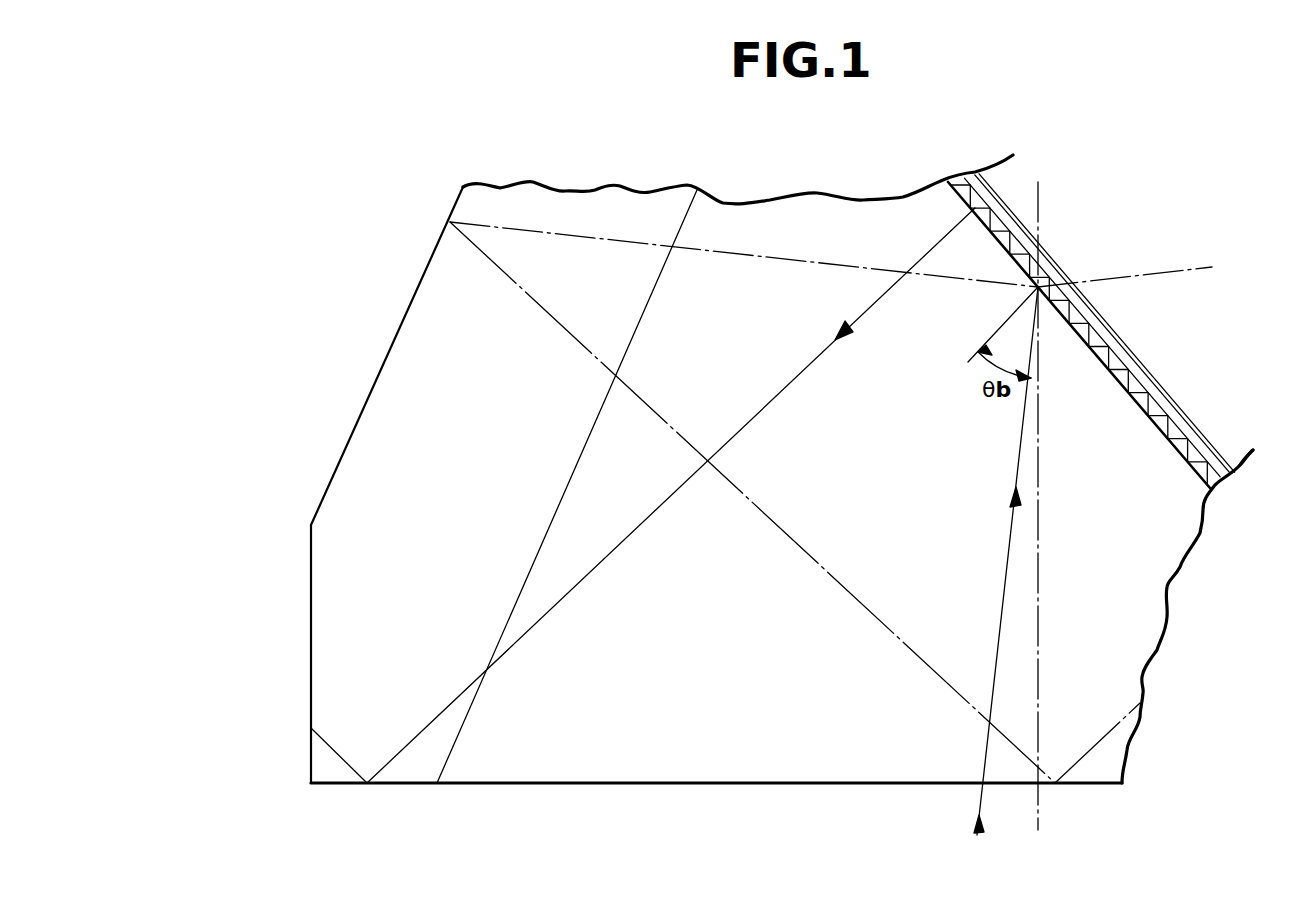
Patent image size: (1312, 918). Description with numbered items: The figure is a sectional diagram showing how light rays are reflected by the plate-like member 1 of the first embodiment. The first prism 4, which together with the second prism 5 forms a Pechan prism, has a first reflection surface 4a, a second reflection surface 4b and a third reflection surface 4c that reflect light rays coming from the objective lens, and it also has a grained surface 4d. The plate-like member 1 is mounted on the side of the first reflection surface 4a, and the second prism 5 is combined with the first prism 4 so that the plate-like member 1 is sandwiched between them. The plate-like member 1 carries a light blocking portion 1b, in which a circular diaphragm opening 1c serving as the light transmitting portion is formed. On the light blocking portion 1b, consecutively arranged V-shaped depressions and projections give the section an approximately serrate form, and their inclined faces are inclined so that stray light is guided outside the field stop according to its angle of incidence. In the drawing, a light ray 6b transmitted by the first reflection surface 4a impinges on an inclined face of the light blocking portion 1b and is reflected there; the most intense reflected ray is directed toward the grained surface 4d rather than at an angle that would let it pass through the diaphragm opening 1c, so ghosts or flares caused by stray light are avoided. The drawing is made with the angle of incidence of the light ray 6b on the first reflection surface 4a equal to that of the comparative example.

The plate-like member 1 is at (1096, 367).
The light blocking portion 1b is at (1133, 400).
The diaphragm opening 1c is at (1197, 453).
The first prism 4 is at (720, 757).
The first reflection surface 4a is at (1093, 362).
The second reflection surface 4b is at (381, 383).
The third reflection surface 4c is at (943, 782).
The grained surface 4d is at (311, 680).
The second prism 5 is at (1240, 477).
The light ray 6b is at (765, 405).